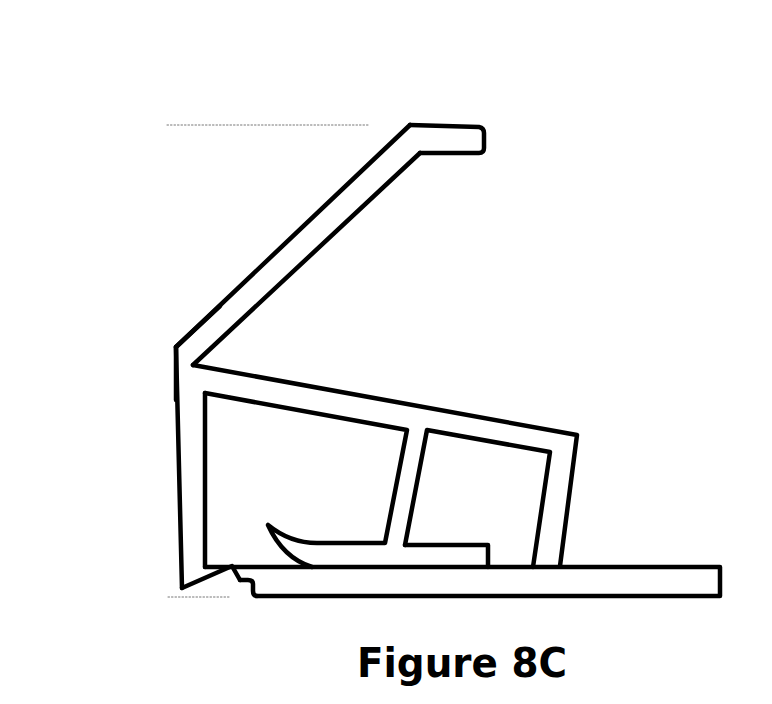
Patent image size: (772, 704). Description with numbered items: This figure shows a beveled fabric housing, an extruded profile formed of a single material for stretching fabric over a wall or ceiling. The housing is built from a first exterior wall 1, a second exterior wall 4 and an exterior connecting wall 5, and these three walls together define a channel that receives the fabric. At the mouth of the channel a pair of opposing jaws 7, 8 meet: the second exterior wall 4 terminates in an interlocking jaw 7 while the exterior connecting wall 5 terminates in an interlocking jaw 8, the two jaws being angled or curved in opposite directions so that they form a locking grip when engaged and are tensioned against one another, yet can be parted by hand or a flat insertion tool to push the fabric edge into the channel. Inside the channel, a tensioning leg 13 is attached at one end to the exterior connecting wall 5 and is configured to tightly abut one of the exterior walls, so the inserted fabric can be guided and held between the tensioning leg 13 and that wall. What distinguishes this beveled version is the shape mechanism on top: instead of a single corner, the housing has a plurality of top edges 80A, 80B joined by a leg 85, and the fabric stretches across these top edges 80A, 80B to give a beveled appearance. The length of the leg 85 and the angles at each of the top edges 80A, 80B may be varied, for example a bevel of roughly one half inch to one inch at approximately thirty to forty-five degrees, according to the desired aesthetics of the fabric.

The first exterior wall 1 is at (498, 582).
The second exterior wall 4 is at (188, 450).
The exterior connecting wall 5 is at (400, 407).
The interlocking jaw 7 is at (247, 575).
The interlocking jaw 8 is at (210, 573).
The tensioning leg 13 is at (455, 553).
The top edge 80A is at (175, 345).
The top edge 80B is at (410, 125).
The leg 85 is at (298, 243).